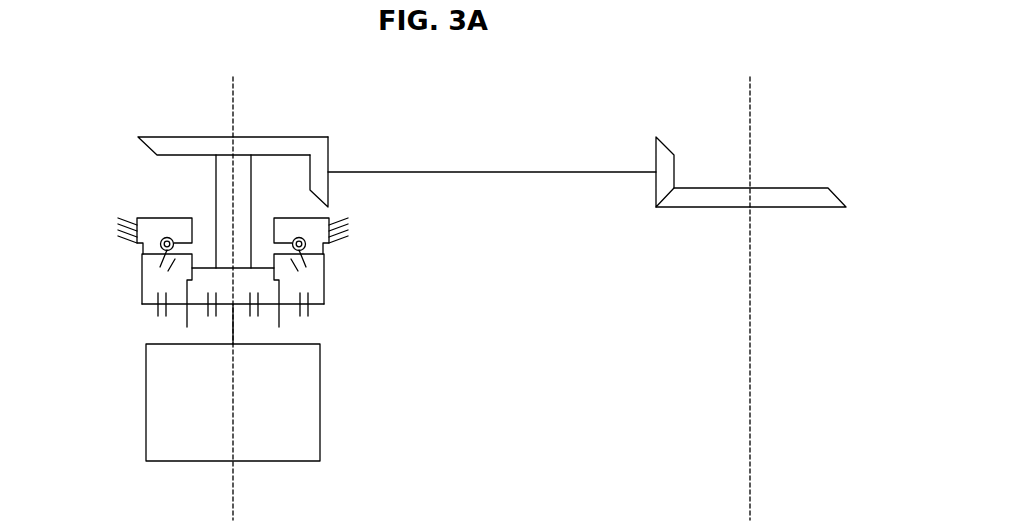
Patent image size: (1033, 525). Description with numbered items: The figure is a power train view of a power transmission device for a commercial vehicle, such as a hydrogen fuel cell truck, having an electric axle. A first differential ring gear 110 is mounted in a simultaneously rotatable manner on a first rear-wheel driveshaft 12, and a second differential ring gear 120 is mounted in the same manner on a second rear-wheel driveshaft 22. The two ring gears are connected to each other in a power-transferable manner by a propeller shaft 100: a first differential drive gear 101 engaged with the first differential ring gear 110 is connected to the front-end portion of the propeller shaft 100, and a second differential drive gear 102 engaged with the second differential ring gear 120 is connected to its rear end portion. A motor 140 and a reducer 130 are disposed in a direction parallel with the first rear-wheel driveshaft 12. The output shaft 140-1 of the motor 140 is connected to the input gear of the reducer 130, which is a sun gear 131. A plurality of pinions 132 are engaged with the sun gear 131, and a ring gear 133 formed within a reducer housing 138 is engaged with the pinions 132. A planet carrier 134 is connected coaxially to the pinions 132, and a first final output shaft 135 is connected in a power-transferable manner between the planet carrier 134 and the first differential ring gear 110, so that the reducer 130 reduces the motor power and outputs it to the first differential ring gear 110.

The first rear-wheel driveshaft 12 is at (235, 102).
The second rear-wheel driveshaft 22 is at (748, 107).
The propeller shaft 100 is at (469, 160).
The first differential drive gear 101 is at (330, 158).
The second differential drive gear 102 is at (656, 158).
The first differential ring gear 110 is at (194, 137).
The second differential ring gear 120 is at (698, 208).
The reducer 130 is at (115, 318).
The sun gear 131 is at (227, 305).
The pinions 132 is at (176, 286).
The ring gear 133 is at (160, 300).
The planet carrier 134 is at (146, 263).
The first final output shaft 135 is at (216, 191).
The reducer housing 138 is at (326, 258).
The motor 140 is at (321, 402).
The output shaft 140-1 is at (238, 333).